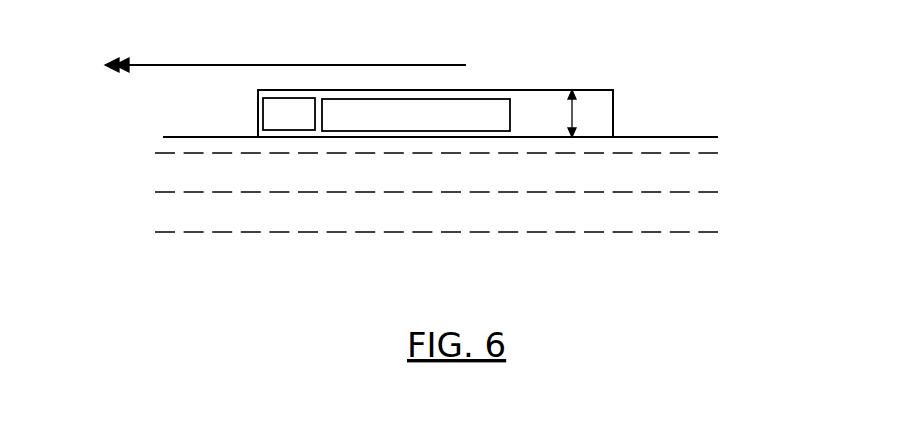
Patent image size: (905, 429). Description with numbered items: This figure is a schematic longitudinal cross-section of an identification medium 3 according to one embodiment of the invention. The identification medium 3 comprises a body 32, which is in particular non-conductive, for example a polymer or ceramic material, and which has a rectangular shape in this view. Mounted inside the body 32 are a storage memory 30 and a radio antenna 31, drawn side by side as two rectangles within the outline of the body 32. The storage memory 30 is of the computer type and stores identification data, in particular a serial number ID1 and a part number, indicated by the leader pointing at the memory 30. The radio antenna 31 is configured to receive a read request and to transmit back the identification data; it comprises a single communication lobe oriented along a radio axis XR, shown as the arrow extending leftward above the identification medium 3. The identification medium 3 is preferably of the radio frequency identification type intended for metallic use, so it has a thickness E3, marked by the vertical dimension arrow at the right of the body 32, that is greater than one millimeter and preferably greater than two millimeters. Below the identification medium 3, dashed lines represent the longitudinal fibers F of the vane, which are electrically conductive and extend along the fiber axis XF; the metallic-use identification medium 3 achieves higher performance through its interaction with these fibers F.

The identification medium 3 is at (507, 89).
The storage memory 30 is at (289, 114).
The radio antenna 31 is at (416, 115).
The body 32 is at (603, 120).
The thickness E3 is at (551, 113).
The radio axis XR is at (267, 65).
The serial number ID1 is at (258, 110).
The longitudinal fibers F is at (707, 153).
The fiber axis XF is at (434, 232).